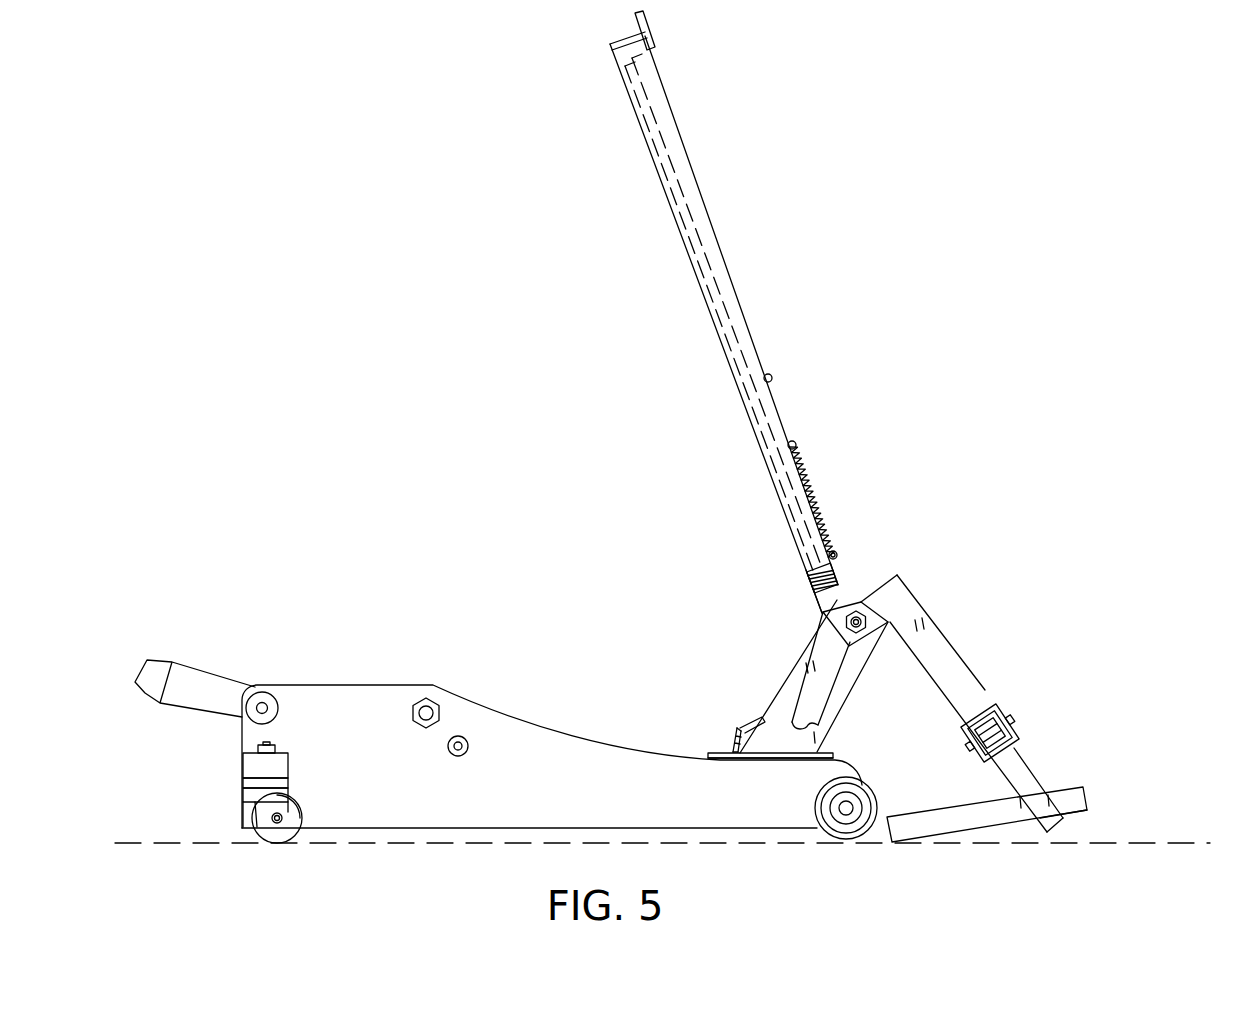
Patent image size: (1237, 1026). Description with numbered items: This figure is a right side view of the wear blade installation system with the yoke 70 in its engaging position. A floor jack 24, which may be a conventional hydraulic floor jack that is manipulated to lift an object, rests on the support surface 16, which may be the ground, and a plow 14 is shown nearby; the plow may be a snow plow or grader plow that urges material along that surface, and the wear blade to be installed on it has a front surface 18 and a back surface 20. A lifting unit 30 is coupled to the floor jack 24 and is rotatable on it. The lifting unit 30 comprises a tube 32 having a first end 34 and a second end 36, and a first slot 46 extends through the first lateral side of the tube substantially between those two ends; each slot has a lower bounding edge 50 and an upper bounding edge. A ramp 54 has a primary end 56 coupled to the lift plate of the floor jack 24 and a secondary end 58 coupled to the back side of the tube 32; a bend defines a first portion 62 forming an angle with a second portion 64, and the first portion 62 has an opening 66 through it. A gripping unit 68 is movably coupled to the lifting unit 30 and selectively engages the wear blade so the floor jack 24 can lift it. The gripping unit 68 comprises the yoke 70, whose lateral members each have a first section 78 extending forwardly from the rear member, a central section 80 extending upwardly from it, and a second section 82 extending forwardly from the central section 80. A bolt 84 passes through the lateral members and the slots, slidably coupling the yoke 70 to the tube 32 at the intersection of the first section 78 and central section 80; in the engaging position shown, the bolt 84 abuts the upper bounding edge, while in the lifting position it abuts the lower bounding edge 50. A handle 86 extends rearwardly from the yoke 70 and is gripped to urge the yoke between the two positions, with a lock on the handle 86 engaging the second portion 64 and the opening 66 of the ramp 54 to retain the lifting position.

The plow 14 is at (1083, 788).
The support surface 16 is at (162, 843).
The front surface 18 is at (1068, 788).
The back surface 20 is at (1086, 810).
The floor jack 24 is at (497, 678).
The lifting unit 30 is at (878, 665).
The tube 32 is at (812, 599).
The first end 34 is at (772, 758).
The second end 36 is at (873, 611).
The first slot 46 is at (848, 688).
The lower bounding edge 50 is at (818, 725).
The ramp 54 is at (740, 727).
The primary end 56 is at (736, 758).
The secondary end 58 is at (800, 700).
The first portion 62 is at (712, 752).
The second portion 64 is at (762, 714).
The opening 66 is at (722, 722).
The gripping unit 68 is at (915, 577).
The yoke 70 is at (985, 680).
The first section 78 is at (847, 566).
The central section 80 is at (898, 574).
The second section 82 is at (955, 703).
The bolt 84 is at (856, 620).
The handle 86 is at (678, 228).